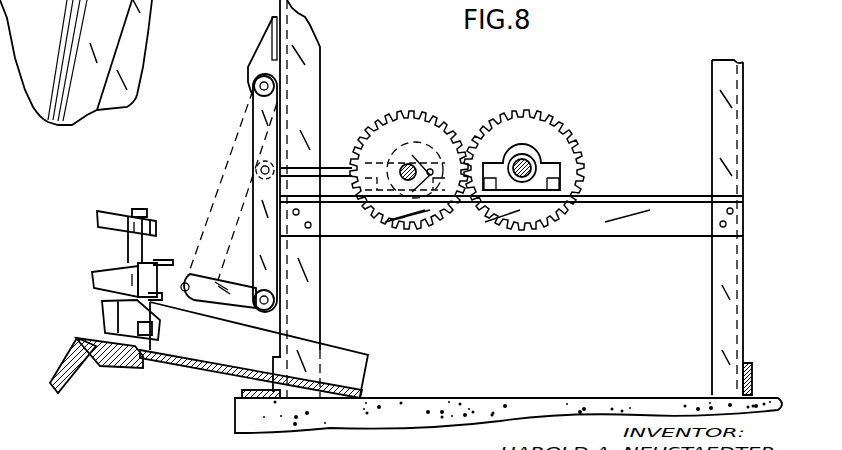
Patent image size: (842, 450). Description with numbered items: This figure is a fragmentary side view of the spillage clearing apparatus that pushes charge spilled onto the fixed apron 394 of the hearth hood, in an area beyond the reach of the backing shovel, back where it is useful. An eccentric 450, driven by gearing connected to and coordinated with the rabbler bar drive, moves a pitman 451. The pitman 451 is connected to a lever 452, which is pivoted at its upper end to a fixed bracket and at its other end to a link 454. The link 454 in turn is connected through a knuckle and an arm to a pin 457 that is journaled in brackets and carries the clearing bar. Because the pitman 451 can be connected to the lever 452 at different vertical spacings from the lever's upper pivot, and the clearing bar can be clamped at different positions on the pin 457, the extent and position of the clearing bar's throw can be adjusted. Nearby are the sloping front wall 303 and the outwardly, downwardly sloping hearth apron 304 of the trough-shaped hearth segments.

The eccentric 450 is at (450, 134).
The pitman 451 is at (336, 160).
The lever 452 is at (268, 118).
The link 454 is at (214, 306).
The pin 457 is at (123, 250).
The fixed apron 394 is at (198, 367).
The hearth apron 304 is at (113, 360).
The sloping front wall 303 is at (62, 360).